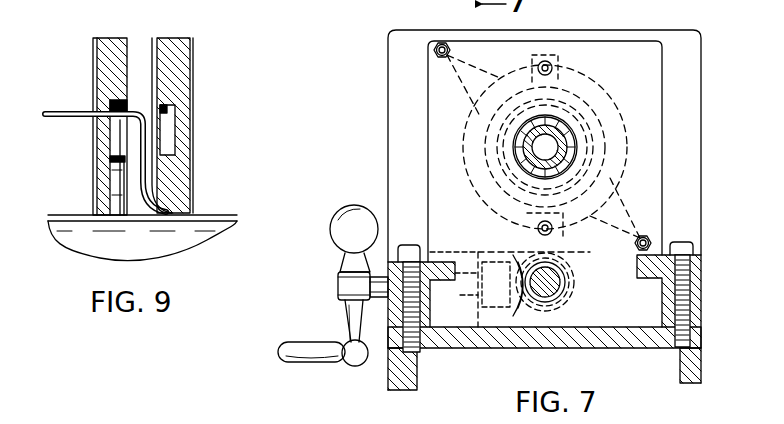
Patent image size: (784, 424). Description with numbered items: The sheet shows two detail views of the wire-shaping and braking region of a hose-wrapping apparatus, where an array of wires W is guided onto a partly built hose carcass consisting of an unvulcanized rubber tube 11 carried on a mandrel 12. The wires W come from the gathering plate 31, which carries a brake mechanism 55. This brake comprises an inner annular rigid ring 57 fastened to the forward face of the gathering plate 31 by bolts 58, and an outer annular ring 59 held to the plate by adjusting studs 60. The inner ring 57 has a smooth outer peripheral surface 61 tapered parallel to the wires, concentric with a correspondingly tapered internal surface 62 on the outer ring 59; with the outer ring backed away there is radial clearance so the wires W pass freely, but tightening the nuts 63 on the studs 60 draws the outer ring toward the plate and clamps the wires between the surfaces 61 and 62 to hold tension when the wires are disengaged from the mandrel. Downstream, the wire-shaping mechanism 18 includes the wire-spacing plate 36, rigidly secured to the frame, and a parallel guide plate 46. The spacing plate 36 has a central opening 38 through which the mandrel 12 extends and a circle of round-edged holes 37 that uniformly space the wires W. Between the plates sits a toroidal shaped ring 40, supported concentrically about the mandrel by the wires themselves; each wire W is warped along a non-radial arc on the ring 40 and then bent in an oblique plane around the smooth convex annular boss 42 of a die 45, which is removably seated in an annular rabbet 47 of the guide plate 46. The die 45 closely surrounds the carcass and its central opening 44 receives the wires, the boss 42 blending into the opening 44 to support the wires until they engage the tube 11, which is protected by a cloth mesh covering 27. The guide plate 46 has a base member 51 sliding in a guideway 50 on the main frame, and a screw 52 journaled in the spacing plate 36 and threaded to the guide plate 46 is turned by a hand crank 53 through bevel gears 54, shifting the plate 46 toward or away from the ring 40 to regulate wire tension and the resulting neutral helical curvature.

In FIG. 9, the unvulcanized rubber tube 11 is at (93, 228).
In FIG. 7, the unvulcanized rubber tube 11 is at (570, 142).
In FIG. 7, the mandrel 12 is at (567, 152).
In FIG. 7, the wire-shaping mechanism 18 is at (716, 158).
In FIG. 7, the cloth mesh covering 27 is at (557, 122).
In FIG. 7, the gathering plate 31 is at (388, 120).
In FIG. 9, the wire-spacing plate 36 is at (100, 52).
In FIG. 9, the holes 37 is at (110, 120).
In FIG. 9, the central opening 38 is at (105, 160).
In FIG. 9, the toroidal shaped ring 40 is at (128, 168).
In FIG. 7, the toroidal shaped ring 40 is at (492, 172).
In FIG. 9, the annular boss 42 is at (148, 192).
In FIG. 9, the central opening 44 is at (170, 213).
In FIG. 9, the die 45 is at (165, 127).
In FIG. 9, the guide plate 46 is at (173, 53).
In FIG. 7, the guide plate 46 is at (652, 98).
In FIG. 9, the annular rabbet 47 is at (163, 110).
In FIG. 7, the guideway 50 is at (662, 313).
In FIG. 7, the base member 51 is at (430, 318).
In FIG. 7, the screw 52 is at (560, 285).
In FIG. 7, the hand crank 53 is at (322, 354).
In FIG. 7, the bevel gears 54 is at (520, 256).
In FIG. 7, the brake mechanism 55 is at (594, 79).
In FIG. 7, the inner annular rigid ring 57 is at (490, 137).
In FIG. 7, the bolts 58 is at (550, 60).
In FIG. 7, the outer annular ring 59 is at (480, 118).
In FIG. 7, the adjusting studs 60 is at (440, 46).
In FIG. 7, the outer peripheral surface 61 is at (602, 177).
In FIG. 7, the internal surface 62 is at (505, 190).
In FIG. 7, the nuts 63 is at (440, 60).
In FIG. 9, the wires W is at (70, 112).